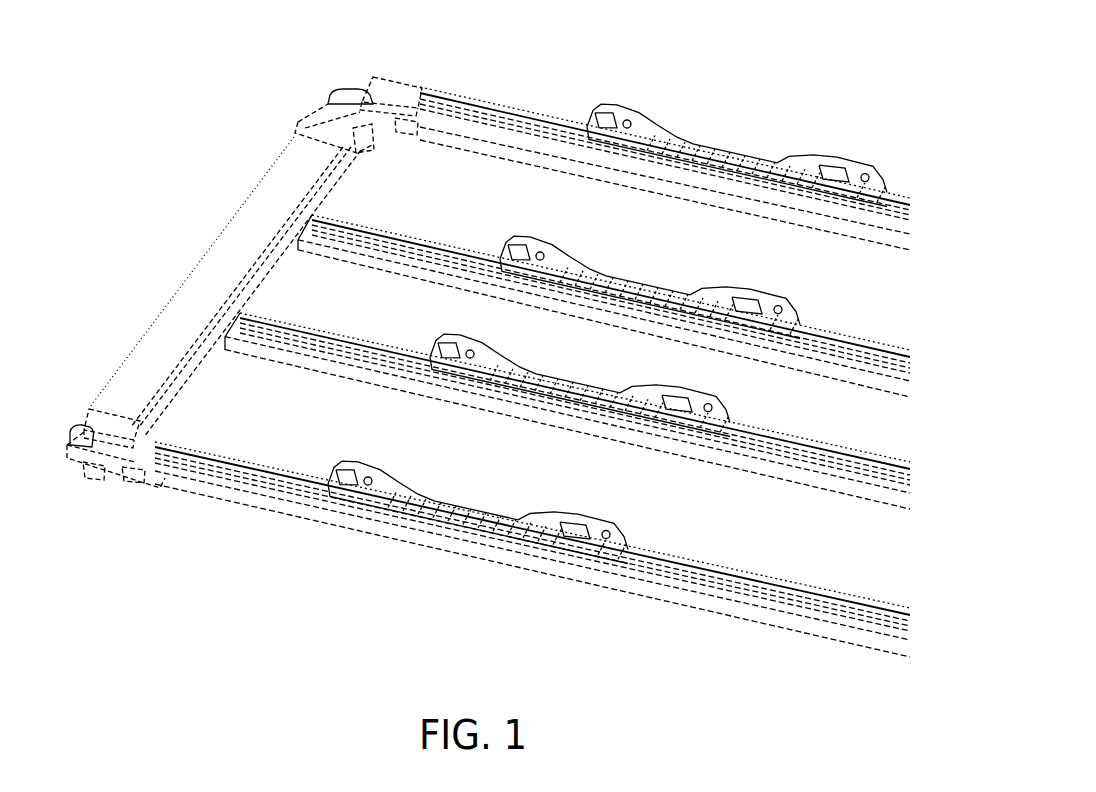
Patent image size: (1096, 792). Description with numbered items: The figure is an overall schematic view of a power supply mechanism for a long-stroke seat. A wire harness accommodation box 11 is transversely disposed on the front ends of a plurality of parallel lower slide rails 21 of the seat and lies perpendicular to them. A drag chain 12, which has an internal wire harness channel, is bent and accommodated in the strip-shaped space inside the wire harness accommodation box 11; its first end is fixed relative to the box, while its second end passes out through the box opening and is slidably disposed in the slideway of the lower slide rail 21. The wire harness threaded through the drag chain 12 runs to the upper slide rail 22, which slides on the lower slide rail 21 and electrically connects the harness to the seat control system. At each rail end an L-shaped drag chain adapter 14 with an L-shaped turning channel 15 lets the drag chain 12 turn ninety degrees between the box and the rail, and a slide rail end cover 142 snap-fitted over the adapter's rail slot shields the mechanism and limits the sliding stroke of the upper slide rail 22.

The wire harness accommodation box 11 is at (235, 247).
The drag chain 12 is at (512, 127).
The drag chain adapter 14 is at (325, 113).
The turning channel 15 is at (345, 92).
The slide rail end cover 142 is at (393, 98).
The lower slide rail 21 is at (813, 215).
The upper slide rail 22 is at (657, 133).